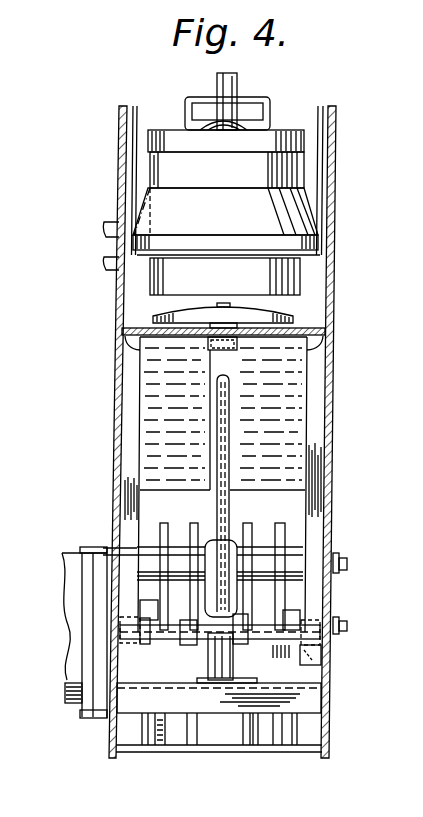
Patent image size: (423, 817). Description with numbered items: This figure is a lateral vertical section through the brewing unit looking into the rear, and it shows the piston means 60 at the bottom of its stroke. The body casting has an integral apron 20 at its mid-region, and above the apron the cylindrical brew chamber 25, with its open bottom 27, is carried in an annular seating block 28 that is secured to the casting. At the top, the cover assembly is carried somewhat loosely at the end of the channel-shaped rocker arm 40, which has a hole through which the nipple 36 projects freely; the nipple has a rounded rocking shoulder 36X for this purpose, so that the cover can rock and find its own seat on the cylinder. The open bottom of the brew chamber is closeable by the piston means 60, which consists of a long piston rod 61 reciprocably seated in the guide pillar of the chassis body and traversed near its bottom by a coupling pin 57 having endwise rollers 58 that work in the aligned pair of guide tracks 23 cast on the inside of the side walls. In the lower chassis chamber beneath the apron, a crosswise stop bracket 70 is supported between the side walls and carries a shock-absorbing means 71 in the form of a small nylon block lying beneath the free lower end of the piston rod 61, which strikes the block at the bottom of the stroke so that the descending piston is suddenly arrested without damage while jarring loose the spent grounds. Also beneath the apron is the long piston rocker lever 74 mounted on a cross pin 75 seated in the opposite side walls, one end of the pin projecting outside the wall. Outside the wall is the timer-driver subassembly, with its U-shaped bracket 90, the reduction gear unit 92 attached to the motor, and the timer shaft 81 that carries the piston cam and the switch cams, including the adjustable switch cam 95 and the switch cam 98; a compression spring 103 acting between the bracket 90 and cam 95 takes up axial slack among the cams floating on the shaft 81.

The apron 20 is at (287, 338).
The guide tracks 23 is at (133, 477).
The brew chamber 25 is at (290, 278).
The open bottom 27 is at (288, 299).
The annular seating block 28 is at (247, 231).
The nipple 36 is at (237, 88).
The rounded rocking shoulder 36X is at (226, 126).
The rocker arm 40 is at (252, 117).
The coupling pin 57 is at (178, 628).
The rollers 58 is at (129, 656).
The piston means 60 is at (147, 313).
The piston rod 61 is at (220, 443).
The stop bracket 70 is at (189, 711).
The shock-absorbing means 71 is at (197, 681).
The piston rocker lever 74 is at (236, 541).
The cross pin 75 is at (342, 568).
The timer shaft 81 is at (345, 624).
The U-shaped bracket 90 is at (230, 746).
The reduction gear unit 92 is at (65, 689).
The switch cam 95 is at (279, 541).
The switch cam 98 is at (173, 524).
The compression spring 103 is at (312, 660).